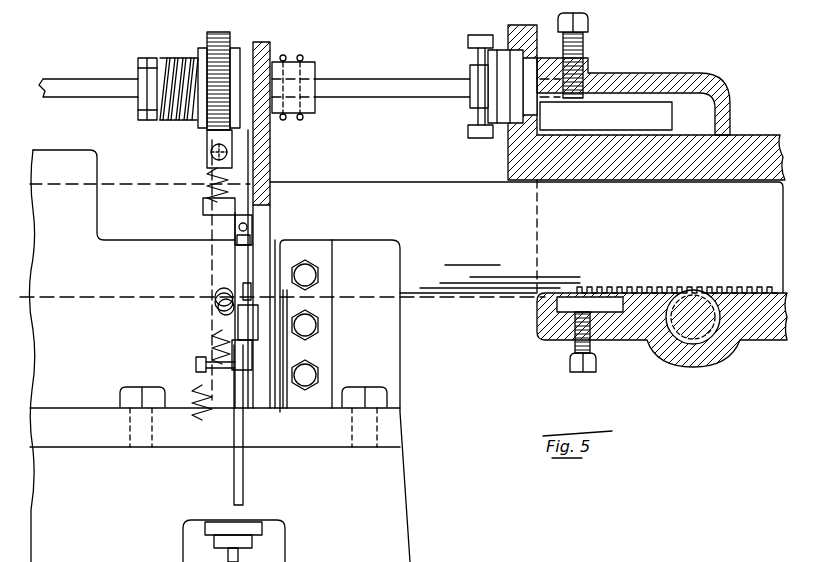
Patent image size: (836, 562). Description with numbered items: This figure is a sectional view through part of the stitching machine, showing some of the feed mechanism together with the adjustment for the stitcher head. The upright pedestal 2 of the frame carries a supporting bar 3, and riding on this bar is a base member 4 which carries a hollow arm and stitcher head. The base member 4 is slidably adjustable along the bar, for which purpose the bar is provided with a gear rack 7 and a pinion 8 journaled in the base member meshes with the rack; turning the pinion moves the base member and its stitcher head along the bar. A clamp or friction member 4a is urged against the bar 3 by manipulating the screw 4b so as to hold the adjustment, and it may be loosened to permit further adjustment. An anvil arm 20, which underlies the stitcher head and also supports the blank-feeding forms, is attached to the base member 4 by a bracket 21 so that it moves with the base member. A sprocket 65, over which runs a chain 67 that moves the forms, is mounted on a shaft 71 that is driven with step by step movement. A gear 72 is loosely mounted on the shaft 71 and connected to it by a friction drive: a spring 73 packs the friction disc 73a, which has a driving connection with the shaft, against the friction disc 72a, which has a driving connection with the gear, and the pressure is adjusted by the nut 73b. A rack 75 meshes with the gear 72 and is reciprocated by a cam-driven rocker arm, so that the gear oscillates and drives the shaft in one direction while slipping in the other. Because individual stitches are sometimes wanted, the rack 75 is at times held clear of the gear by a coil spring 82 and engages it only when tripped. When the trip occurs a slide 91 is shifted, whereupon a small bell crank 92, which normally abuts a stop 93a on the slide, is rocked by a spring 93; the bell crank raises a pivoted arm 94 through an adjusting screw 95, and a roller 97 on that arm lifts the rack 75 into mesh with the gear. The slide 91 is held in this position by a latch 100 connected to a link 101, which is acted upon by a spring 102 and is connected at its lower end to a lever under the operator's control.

The pedestal 2 is at (400, 550).
The supporting bar 3 is at (388, 186).
The base member 4 is at (764, 342).
The clamp or friction member 4a is at (560, 305).
The screw 4b is at (572, 364).
The gear rack 7 is at (733, 287).
The pinion 8 is at (700, 344).
The anvil arm 20 is at (512, 150).
The bracket 21 is at (605, 80).
The sprocket 65 is at (480, 58).
The chain 67 is at (492, 34).
The shaft 71 is at (392, 72).
The gear 72 is at (232, 35).
The friction disc 72a is at (222, 24).
The spring 73 is at (175, 60).
The friction disc 73a is at (203, 48).
The nut 73b is at (145, 65).
The rack 75 is at (210, 153).
The coil spring 82 is at (208, 195).
The slide 91 is at (240, 325).
The bell crank 92 is at (246, 238).
The spring 93 is at (217, 290).
The stop 93a is at (249, 284).
The pivoted arm 94 is at (270, 186).
The adjusting screw 95 is at (252, 237).
The roller 97 is at (210, 210).
The latch 100 is at (254, 352).
The link 101 is at (244, 468).
The spring 102 is at (198, 422).